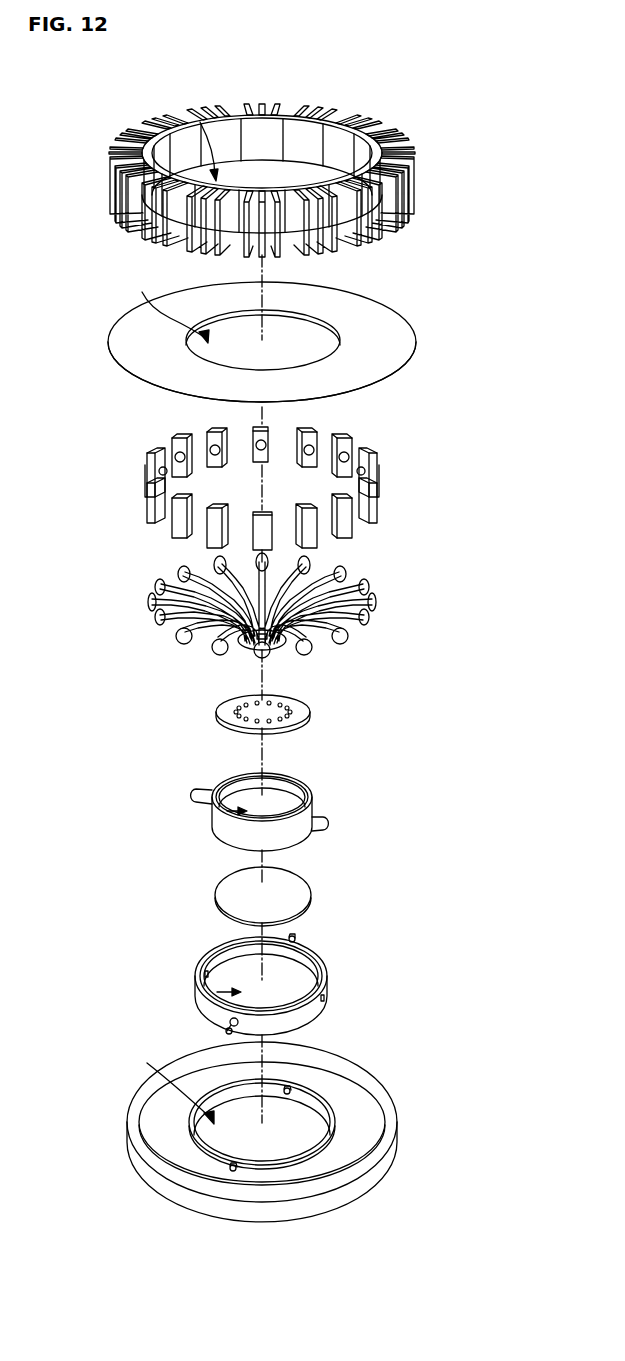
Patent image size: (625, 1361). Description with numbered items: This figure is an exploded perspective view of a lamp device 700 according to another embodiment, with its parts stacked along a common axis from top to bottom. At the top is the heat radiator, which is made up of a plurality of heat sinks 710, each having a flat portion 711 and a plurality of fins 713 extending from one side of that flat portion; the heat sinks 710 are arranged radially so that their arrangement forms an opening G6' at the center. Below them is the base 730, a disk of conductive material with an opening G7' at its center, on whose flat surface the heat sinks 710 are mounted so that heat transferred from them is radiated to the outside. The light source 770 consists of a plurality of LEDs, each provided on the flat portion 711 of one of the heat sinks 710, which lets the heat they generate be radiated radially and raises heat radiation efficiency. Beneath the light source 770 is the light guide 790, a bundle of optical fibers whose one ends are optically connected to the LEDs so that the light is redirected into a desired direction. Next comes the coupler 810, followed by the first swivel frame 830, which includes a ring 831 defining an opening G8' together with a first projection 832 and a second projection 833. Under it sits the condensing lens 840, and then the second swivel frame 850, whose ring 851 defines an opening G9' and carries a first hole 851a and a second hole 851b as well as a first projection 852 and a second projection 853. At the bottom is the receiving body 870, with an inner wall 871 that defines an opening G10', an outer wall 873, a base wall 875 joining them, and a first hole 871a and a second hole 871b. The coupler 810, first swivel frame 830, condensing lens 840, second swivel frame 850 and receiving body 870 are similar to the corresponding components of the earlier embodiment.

The lamp device 700 is at (76, 82).
The heat sink 710 is at (292, 167).
The flat portion 711 is at (342, 146).
The fins 713 is at (393, 137).
The base 730 is at (402, 339).
The light source 770 is at (378, 473).
The light guide 790 is at (375, 604).
The coupler 810 is at (302, 705).
The first swivel frame 830 is at (300, 803).
The ring 831 is at (308, 794).
The first projection 832 is at (298, 808).
The second projection 833 is at (225, 779).
The condensing lens 840 is at (307, 892).
The second swivel frame 850 is at (312, 982).
The ring 851 is at (328, 975).
The first hole 851a is at (326, 999).
The second hole 851b is at (300, 964).
The first projection 852 is at (295, 940).
The second projection 853 is at (238, 1026).
The receiving body 870 is at (312, 1132).
The inner wall 871 is at (330, 1110).
The first hole 871a is at (236, 1166).
The second hole 871b is at (293, 1088).
The outer wall 873 is at (387, 1157).
The base wall 875 is at (370, 1128).
The opening G6' is at (167, 139).
The opening G7' is at (163, 308).
The opening G8' is at (204, 825).
The opening G9' is at (194, 1005).
The opening G10' is at (166, 1085).